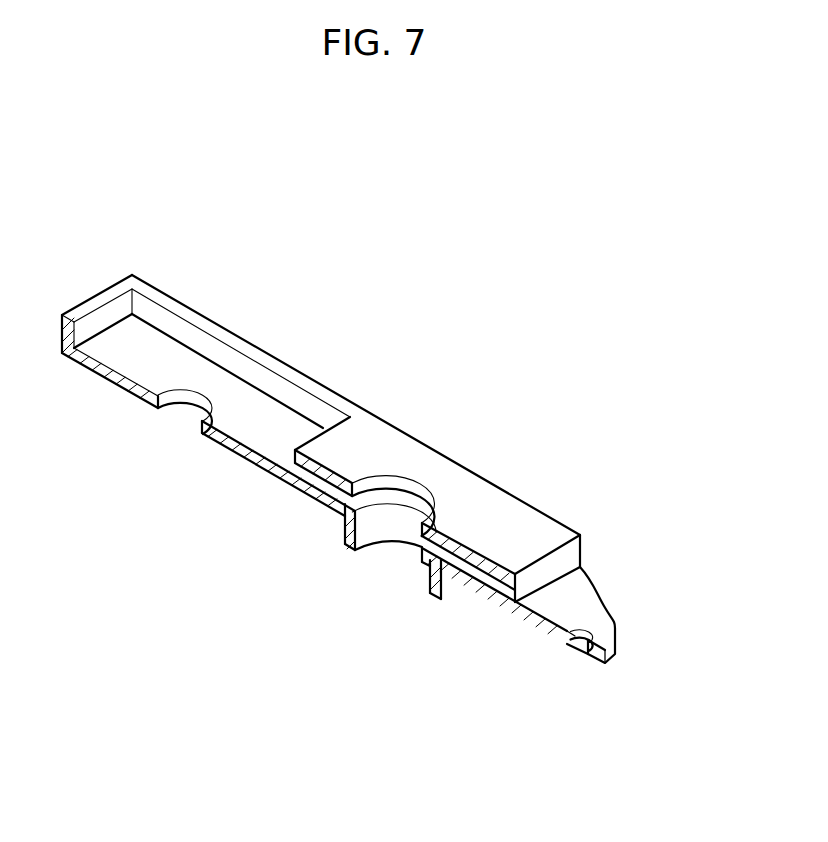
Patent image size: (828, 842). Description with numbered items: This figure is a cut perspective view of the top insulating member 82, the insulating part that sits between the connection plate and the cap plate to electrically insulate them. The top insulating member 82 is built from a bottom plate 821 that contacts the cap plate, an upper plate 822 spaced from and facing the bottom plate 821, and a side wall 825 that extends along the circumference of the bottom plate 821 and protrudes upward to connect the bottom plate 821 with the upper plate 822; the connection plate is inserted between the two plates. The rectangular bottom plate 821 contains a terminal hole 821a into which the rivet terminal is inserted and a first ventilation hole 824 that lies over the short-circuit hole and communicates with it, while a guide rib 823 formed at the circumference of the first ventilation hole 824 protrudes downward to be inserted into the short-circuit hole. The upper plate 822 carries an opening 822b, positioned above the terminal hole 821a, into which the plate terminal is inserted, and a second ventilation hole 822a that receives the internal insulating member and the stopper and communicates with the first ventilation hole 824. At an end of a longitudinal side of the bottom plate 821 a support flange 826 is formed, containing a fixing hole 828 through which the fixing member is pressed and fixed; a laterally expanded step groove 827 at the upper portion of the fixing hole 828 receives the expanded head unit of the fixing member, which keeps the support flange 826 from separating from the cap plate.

The top insulating member 82 is at (457, 428).
The bottom plate 821 is at (255, 432).
The terminal hole 821a is at (178, 405).
The upper plate 822 is at (373, 435).
The second ventilation hole 822a is at (430, 492).
The opening 822b is at (230, 342).
The guide rib 823 is at (441, 585).
The first ventilation hole 824 is at (358, 508).
The side wall 825 is at (97, 322).
The support flange 826 is at (578, 598).
The step groove 827 is at (594, 626).
The fixing hole 828 is at (577, 648).